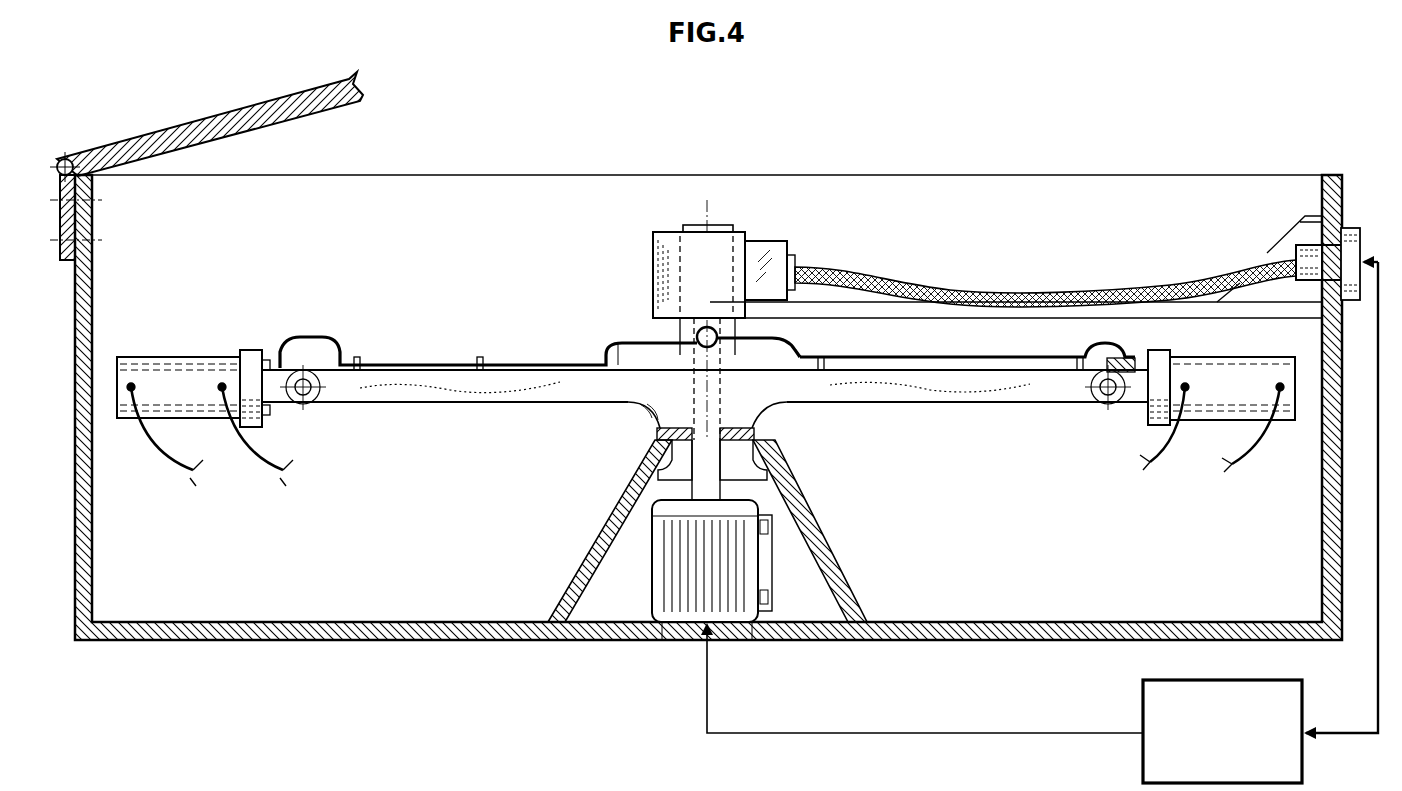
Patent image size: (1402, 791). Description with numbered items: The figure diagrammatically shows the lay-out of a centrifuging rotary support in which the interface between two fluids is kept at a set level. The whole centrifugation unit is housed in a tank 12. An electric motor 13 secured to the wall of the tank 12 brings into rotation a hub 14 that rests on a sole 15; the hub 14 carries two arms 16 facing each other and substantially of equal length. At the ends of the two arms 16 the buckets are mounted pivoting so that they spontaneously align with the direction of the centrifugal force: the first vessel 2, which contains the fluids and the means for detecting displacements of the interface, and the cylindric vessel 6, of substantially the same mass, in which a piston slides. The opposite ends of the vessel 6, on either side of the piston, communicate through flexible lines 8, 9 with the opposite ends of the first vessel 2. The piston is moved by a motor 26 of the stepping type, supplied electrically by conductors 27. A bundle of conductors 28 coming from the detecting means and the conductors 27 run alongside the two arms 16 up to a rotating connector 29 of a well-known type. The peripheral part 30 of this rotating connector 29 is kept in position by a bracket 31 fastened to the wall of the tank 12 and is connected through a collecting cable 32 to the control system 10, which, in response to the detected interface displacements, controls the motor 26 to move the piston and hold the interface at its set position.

The first vessel 2 is at (182, 320).
The cylindric vessel 6 is at (1211, 432).
The flexible line 8 is at (162, 450).
The flexible line 9 is at (256, 450).
The control system 10 is at (1233, 743).
The tank 12 is at (124, 661).
The electric motor 13 is at (683, 600).
The hub 14 is at (652, 418).
The sole 15 is at (797, 563).
The arm 16 is at (458, 385).
The motor 26 is at (1097, 362).
The conductors 27 is at (889, 365).
The bundle of conductors 28 is at (403, 365).
The rotating connector 29 is at (760, 210).
The peripheral part 30 is at (760, 237).
The bracket 31 is at (1310, 226).
The collecting cable 32 is at (893, 286).